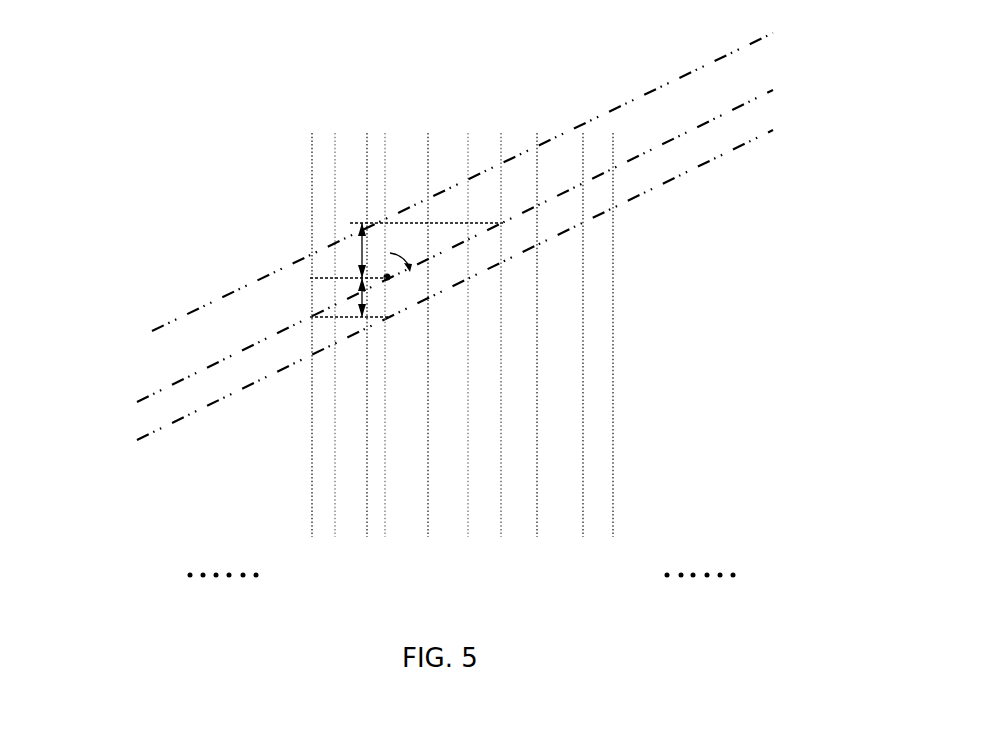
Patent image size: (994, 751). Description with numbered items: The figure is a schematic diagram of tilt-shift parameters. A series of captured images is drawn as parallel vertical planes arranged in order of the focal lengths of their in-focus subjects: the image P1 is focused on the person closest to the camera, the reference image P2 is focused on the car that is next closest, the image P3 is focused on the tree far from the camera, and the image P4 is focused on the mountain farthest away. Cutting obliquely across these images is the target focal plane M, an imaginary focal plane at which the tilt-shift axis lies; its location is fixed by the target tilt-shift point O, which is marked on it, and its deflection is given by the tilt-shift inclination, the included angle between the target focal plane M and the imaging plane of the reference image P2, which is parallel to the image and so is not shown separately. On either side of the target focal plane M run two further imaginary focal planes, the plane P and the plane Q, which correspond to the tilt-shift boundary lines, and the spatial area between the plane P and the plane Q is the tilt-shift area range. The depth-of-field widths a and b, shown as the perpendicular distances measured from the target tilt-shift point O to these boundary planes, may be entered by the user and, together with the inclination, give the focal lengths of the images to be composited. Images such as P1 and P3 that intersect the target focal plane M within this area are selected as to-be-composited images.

The imaginary focal plane P is at (158, 334).
The target focal plane M is at (157, 393).
The imaginary focal plane Q is at (161, 437).
The target tilt-shift point O is at (366, 288).
The depth-of-field width parameter a is at (349, 299).
The depth-of-field width parameter b is at (354, 250).
The image P1 is at (313, 364).
The reference image P2 is at (389, 364).
The image P3 is at (501, 364).
The image P4 is at (616, 364).